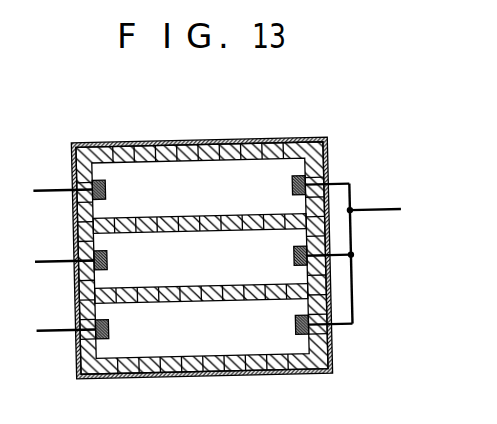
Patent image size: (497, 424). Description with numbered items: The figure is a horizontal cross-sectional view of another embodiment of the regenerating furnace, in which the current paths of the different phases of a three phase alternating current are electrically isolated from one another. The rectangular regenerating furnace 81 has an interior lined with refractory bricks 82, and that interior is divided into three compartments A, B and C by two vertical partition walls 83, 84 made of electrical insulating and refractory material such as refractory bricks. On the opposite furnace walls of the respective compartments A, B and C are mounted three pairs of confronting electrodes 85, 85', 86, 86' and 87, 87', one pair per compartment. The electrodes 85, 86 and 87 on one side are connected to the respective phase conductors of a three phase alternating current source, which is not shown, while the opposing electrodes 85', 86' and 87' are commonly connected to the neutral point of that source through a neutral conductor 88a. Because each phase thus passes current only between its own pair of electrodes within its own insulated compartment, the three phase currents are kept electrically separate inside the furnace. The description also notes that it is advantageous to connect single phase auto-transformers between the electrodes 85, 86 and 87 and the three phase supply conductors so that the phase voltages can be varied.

The rectangular regenerating furnace 81 is at (295, 142).
The refractory bricks 82 is at (218, 148).
The vertical partition wall 83 is at (204, 216).
The vertical partition wall 84 is at (194, 304).
The electrode 85 is at (91, 193).
The electrode 85' is at (295, 187).
The electrode 86 is at (95, 264).
The electrode 86' is at (295, 260).
The electrode 87 is at (95, 334).
The electrode 87' is at (295, 330).
The neutral conductor 88a is at (388, 212).
The compartment A is at (190, 150).
The compartment B is at (192, 249).
The compartment C is at (195, 366).